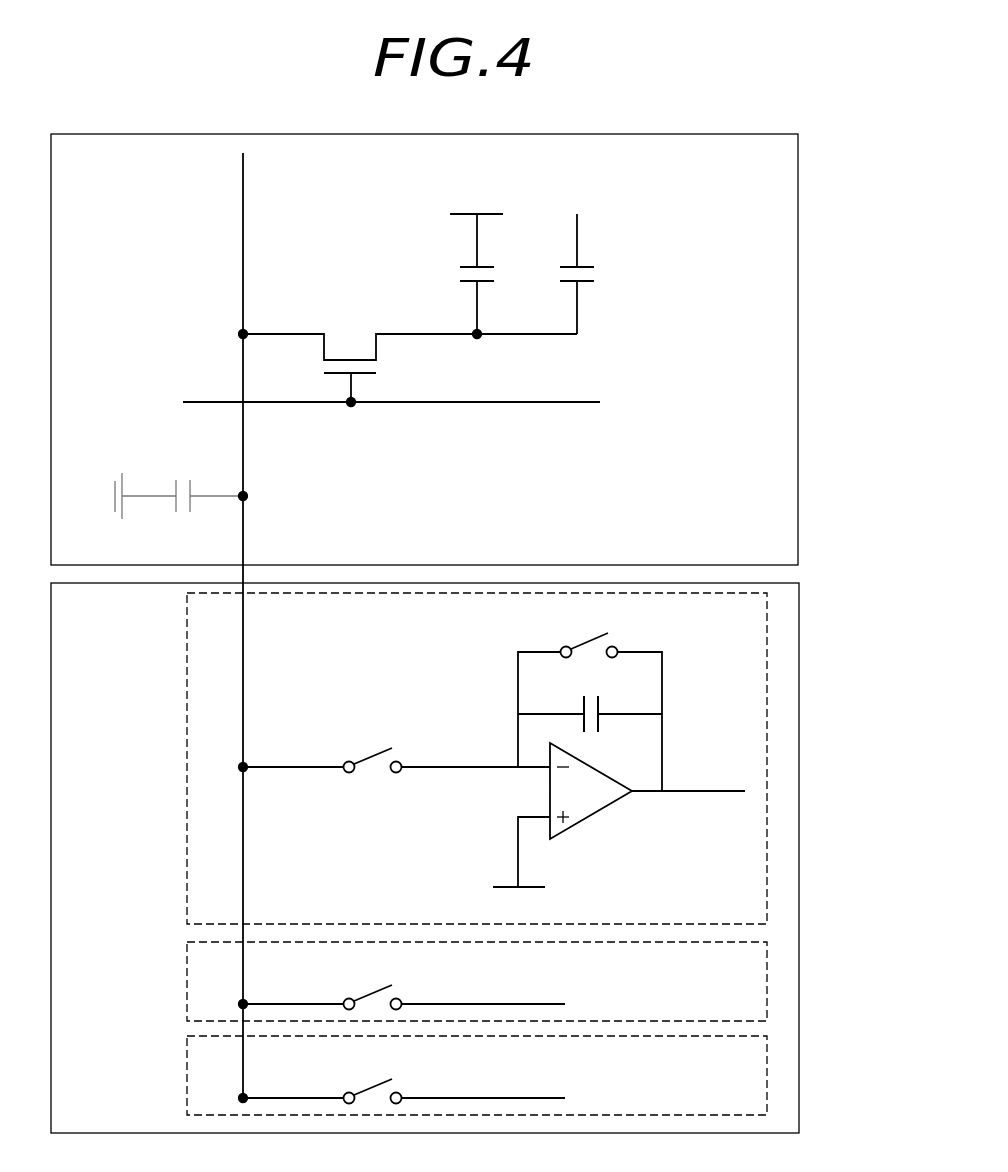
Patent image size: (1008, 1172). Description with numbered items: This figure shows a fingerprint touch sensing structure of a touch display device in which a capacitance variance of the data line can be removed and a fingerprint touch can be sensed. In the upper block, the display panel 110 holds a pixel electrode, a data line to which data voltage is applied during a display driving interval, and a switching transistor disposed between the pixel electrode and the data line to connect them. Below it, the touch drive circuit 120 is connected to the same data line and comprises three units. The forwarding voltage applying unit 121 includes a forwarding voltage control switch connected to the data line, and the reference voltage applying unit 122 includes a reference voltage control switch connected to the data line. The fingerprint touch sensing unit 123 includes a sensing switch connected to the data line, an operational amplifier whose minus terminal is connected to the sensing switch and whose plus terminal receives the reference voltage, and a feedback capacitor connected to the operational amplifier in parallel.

The display panel 110 is at (798, 208).
The touch drive circuit 120 is at (799, 628).
The forwarding voltage applying unit 121 is at (767, 955).
The reference voltage applying unit 122 is at (767, 1062).
The fingerprint touch sensing unit 123 is at (767, 721).